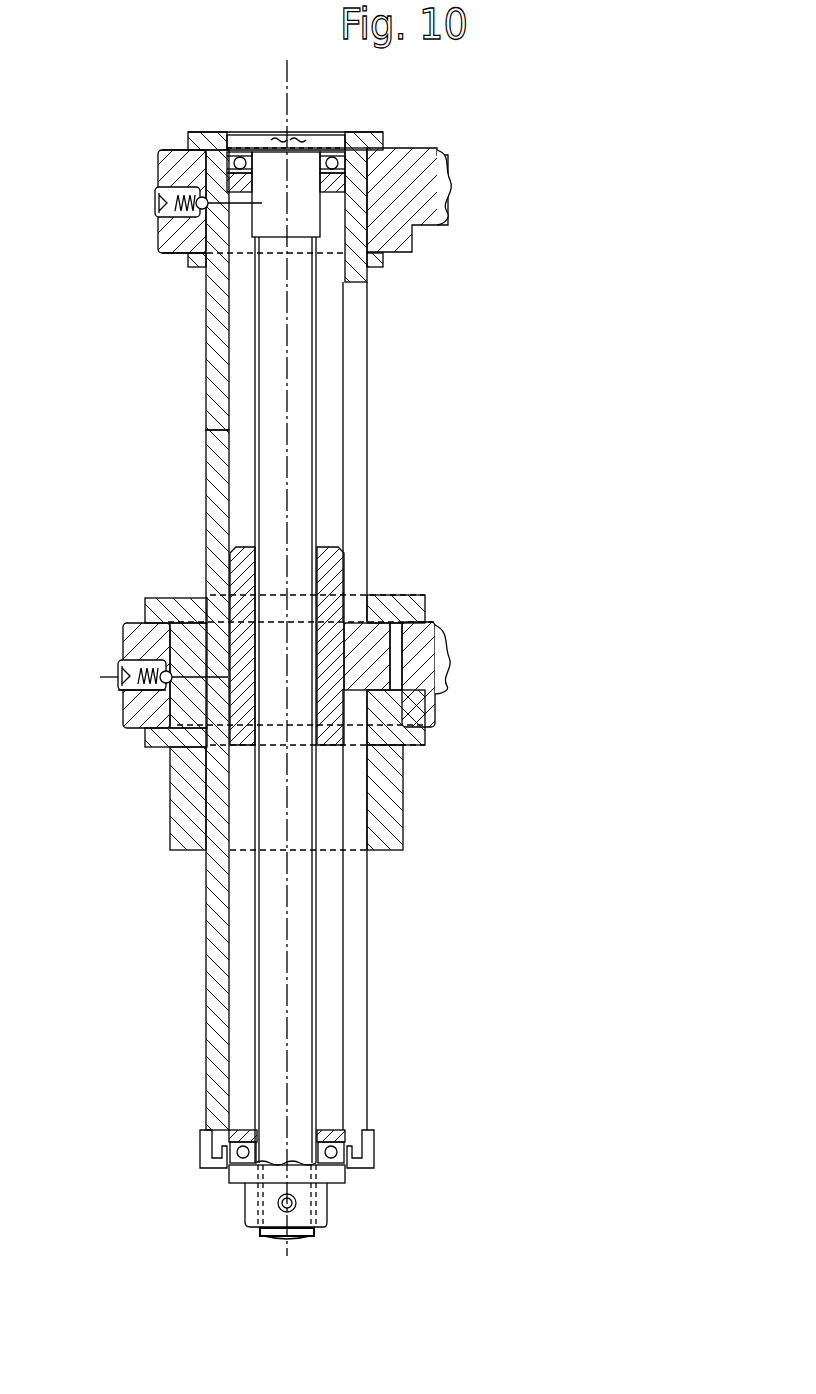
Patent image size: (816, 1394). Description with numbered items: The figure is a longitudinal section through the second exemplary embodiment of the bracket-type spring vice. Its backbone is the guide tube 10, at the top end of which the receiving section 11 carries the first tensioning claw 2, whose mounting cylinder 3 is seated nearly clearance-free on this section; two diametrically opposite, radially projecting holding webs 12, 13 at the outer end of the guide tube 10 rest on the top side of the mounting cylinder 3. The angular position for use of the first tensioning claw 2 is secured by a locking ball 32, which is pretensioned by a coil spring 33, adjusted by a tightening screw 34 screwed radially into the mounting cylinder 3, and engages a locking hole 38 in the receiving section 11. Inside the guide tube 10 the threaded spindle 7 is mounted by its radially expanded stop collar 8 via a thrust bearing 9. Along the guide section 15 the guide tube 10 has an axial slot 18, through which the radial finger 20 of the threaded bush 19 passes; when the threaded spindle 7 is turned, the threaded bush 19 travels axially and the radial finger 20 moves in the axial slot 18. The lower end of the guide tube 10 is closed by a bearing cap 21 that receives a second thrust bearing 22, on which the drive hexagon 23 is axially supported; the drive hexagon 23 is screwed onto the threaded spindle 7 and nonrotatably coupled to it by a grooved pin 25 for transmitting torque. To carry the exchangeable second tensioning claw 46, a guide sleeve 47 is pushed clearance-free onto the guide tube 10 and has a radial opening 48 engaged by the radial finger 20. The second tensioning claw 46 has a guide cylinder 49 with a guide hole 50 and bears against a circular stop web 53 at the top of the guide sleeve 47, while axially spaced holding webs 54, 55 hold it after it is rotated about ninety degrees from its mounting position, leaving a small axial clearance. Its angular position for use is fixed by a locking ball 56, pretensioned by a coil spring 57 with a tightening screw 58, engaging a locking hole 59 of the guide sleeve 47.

The first tensioning claw 2 is at (433, 226).
The mounting cylinder 3 is at (158, 175).
The threaded spindle 7 is at (305, 310).
The stop collar 8 is at (257, 130).
The thrust bearing 9 is at (350, 130).
The guide tube 10 is at (215, 365).
The receiving section 11 is at (370, 198).
The holding web 12 is at (385, 130).
The holding web 13 is at (195, 130).
The guide section 15 is at (213, 467).
The axial slot 18 is at (353, 393).
The threaded bush 19 is at (337, 547).
The radial finger 20 is at (348, 598).
The bearing cap 21 is at (225, 1133).
The second thrust bearing 22 is at (350, 1145).
The drive hexagon 23 is at (250, 1218).
The grooved pin 25 is at (297, 1207).
The locking ball 32 is at (160, 150).
The coil spring 33 is at (158, 243).
The tightening screw 34 is at (155, 203).
The locking hole 38 is at (210, 200).
The second tensioning claw 46 is at (435, 652).
The guide sleeve 47 is at (403, 808).
The radial opening 48 is at (438, 670).
The guide cylinder 49 is at (123, 625).
The guide hole 50 is at (430, 613).
The stop web 53 is at (145, 598).
The holding web 54 is at (425, 743).
The holding web 55 is at (145, 738).
The locking ball 56 is at (155, 748).
The coil spring 57 is at (120, 690).
The tightening screw 58 is at (120, 665).
The locking hole 59 is at (172, 683).